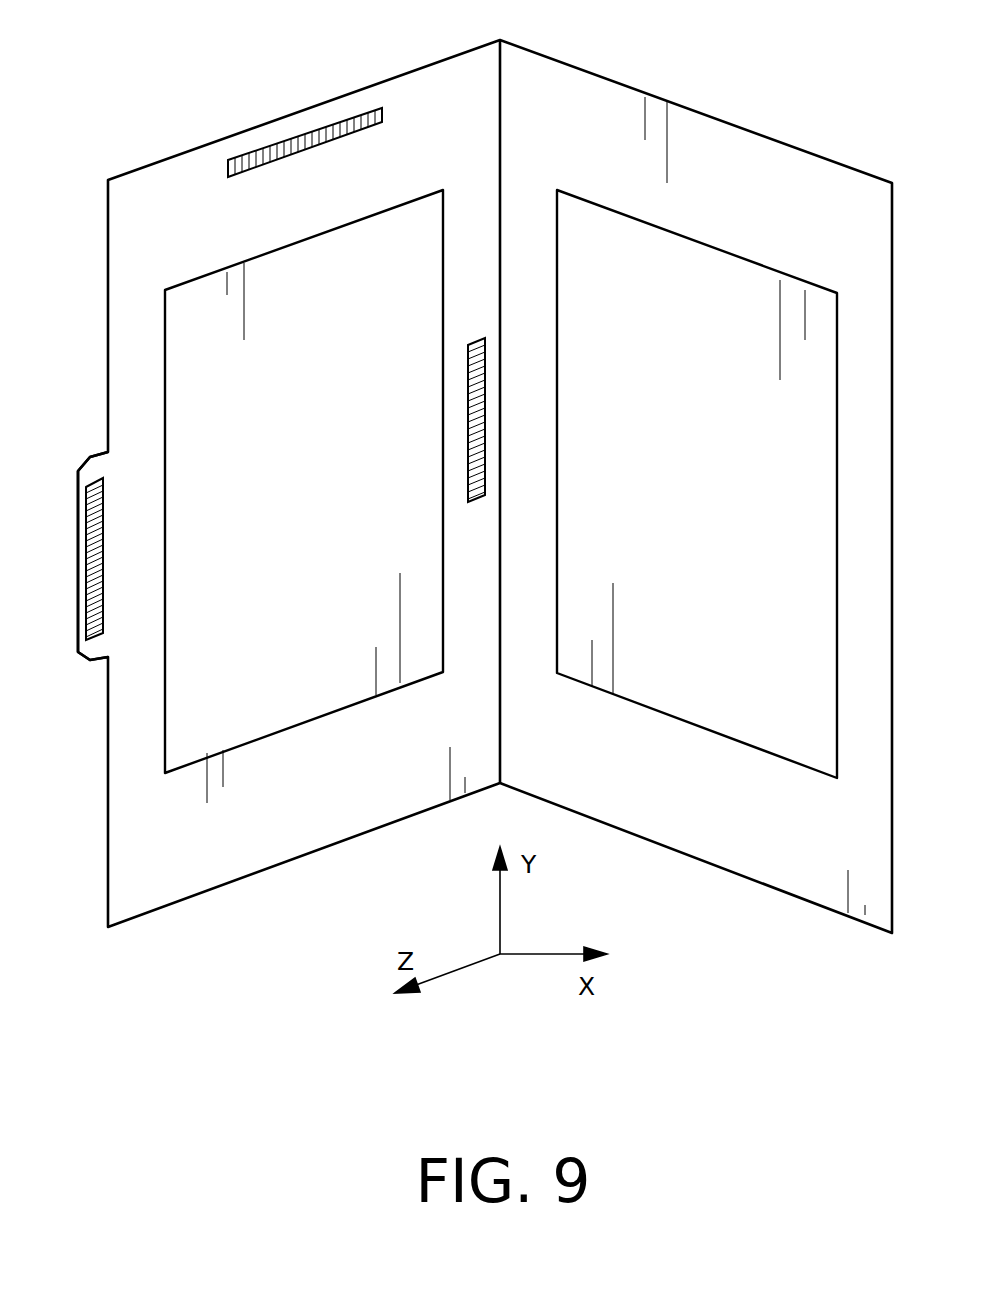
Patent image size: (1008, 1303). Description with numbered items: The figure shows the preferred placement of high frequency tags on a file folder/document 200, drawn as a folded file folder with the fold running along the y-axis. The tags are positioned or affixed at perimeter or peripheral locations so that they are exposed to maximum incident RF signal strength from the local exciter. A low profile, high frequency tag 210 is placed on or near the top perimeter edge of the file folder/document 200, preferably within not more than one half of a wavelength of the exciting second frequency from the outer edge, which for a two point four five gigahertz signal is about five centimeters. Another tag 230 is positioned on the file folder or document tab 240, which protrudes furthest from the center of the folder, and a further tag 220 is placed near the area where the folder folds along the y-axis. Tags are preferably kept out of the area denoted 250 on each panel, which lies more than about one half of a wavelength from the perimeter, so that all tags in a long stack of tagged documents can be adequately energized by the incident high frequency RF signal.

The file folder/document 200 is at (817, 157).
The low profile, high frequency tag 210 is at (392, 112).
The tag 220 is at (473, 343).
The tag 230 is at (85, 502).
The file folder or document tab 240 is at (80, 647).
The area 250 is at (501, 484).